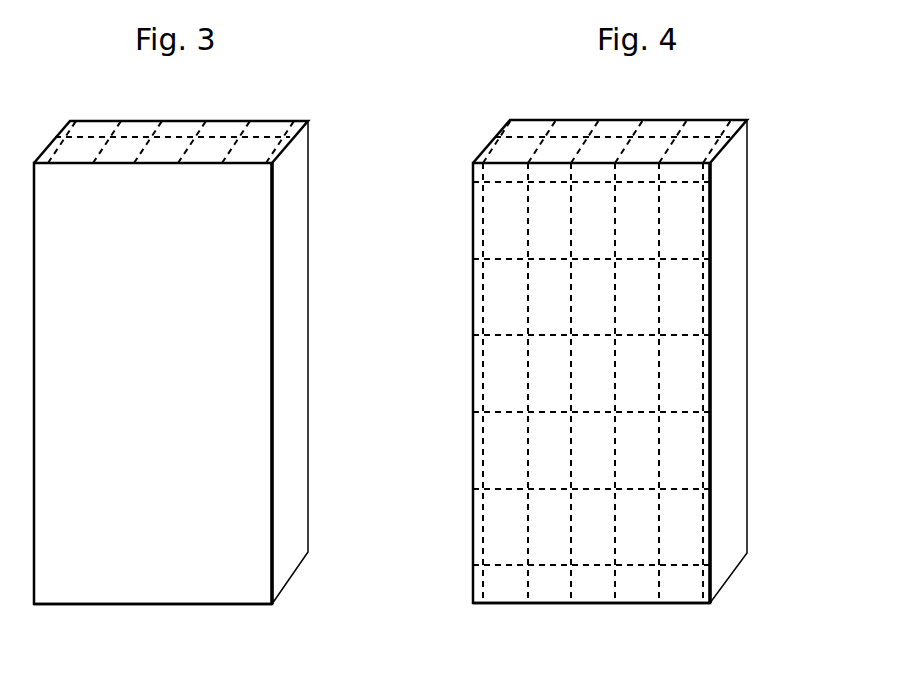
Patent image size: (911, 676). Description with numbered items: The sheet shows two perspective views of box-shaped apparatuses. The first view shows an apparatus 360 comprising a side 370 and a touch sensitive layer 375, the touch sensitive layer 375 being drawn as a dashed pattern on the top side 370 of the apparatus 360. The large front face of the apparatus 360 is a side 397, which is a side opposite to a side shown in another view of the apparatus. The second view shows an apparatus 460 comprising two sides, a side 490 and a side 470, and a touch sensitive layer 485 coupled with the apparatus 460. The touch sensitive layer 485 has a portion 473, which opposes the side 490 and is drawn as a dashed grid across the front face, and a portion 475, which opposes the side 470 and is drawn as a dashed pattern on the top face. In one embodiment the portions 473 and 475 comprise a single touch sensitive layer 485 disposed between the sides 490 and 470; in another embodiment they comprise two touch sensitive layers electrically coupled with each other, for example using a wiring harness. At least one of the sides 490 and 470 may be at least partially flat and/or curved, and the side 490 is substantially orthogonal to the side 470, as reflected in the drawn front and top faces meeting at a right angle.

In FIG. 3, the apparatus 360 is at (330, 110).
In FIG. 3, the side 370 is at (220, 128).
In FIG. 3, the touch sensitive layer 375 is at (82, 137).
In FIG. 3, the side 397 is at (248, 235).
In FIG. 4, the apparatus 460 is at (783, 95).
In FIG. 4, the side 470 is at (657, 130).
In FIG. 4, the portion of touch sensitive layer 475 is at (517, 138).
In FIG. 4, the portion of touch sensitive layer 473 is at (530, 290).
In FIG. 4, the touch sensitive layer 485 is at (662, 307).
In FIG. 4, the side 490 is at (677, 535).